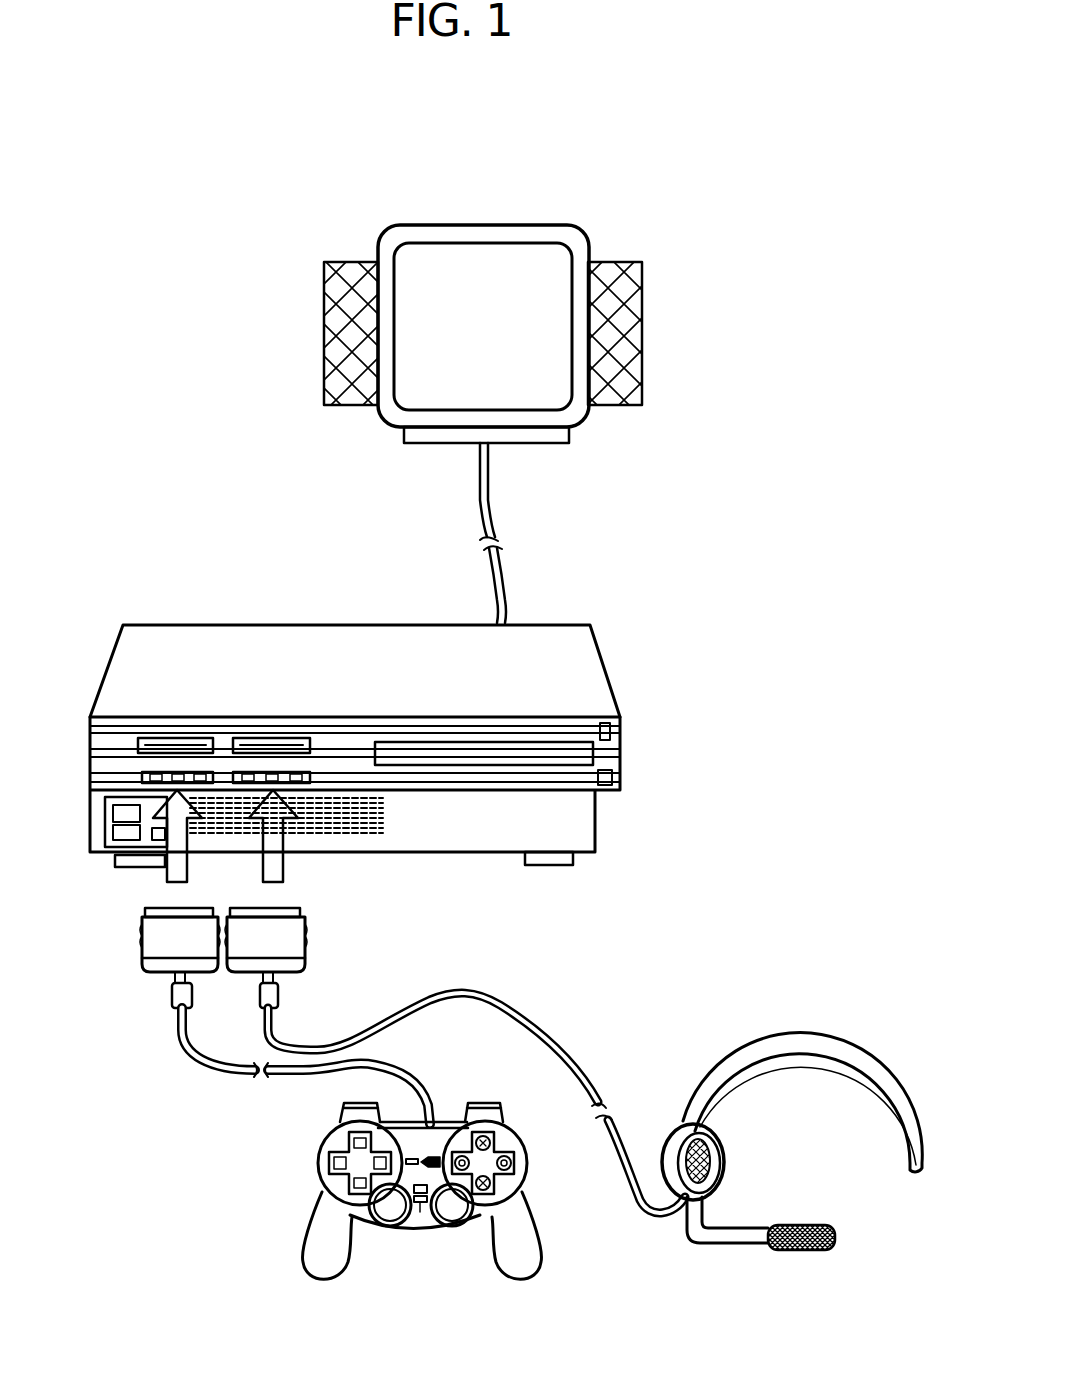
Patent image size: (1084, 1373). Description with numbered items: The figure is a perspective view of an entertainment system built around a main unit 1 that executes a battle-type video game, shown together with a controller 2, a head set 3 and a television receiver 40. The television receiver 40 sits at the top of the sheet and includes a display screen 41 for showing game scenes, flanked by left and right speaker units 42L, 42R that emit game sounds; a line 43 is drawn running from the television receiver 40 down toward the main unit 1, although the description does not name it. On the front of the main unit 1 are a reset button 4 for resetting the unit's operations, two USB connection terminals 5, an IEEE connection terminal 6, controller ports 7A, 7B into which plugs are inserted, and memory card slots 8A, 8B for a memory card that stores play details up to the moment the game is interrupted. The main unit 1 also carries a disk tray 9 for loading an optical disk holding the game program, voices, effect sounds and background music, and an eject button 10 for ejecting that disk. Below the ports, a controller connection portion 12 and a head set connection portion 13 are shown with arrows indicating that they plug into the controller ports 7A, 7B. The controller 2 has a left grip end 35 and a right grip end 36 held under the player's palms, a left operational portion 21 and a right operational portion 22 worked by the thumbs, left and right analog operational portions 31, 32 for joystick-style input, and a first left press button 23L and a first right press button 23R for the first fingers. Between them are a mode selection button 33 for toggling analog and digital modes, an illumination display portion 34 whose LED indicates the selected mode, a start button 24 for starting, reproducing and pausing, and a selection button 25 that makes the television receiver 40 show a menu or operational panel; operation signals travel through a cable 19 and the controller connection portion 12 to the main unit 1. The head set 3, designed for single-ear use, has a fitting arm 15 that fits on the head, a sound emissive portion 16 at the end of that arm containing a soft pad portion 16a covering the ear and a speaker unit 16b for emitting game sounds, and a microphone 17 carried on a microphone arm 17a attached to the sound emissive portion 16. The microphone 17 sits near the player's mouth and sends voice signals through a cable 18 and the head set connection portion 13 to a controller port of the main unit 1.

The main unit 1 is at (217, 649).
The controller 2 is at (544, 1177).
The head set 3 is at (705, 1040).
The reset button 4 is at (600, 730).
The USB connection terminal 5 is at (120, 808).
The IEEE 1394 connection terminal 6 is at (160, 838).
The controller port 7A is at (140, 770).
The controller port 7B is at (314, 770).
The memory card slot 8A is at (184, 738).
The memory card slot 8B is at (262, 738).
The disk tray 9 is at (525, 753).
The eject button 10 is at (607, 788).
The controller connection portion 12 is at (160, 945).
The head set connection portion 13 is at (305, 945).
The fitting arm 15 is at (893, 1143).
The sound emissive portion 16 is at (719, 1126).
The pad portion 16a is at (718, 1190).
The speaker unit 16b is at (702, 1156).
The microphone 17 is at (803, 1251).
The microphone arm 17a is at (740, 1245).
The cable 18 is at (473, 992).
The cable 19 is at (200, 1058).
The left operational portion 21 is at (323, 1166).
The right operational portion 22 is at (502, 1139).
The first left press button 23L is at (358, 1100).
The first right press button 23R is at (480, 1102).
The start button 24 is at (436, 1154).
The selection button 25 is at (411, 1156).
The left analog operational portion 31 is at (385, 1228).
The right analog operational portion 32 is at (455, 1224).
The mode selection button 33 is at (411, 1208).
The illumination display portion 34 is at (426, 1212).
The left grip end 35 is at (315, 1258).
The right grip end 36 is at (527, 1237).
The television receiver 40 is at (532, 199).
The display screen 41 is at (481, 267).
The left speaker unit 42L is at (350, 275).
The right speaker unit 42R is at (612, 275).
The AV cable 43 is at (478, 490).